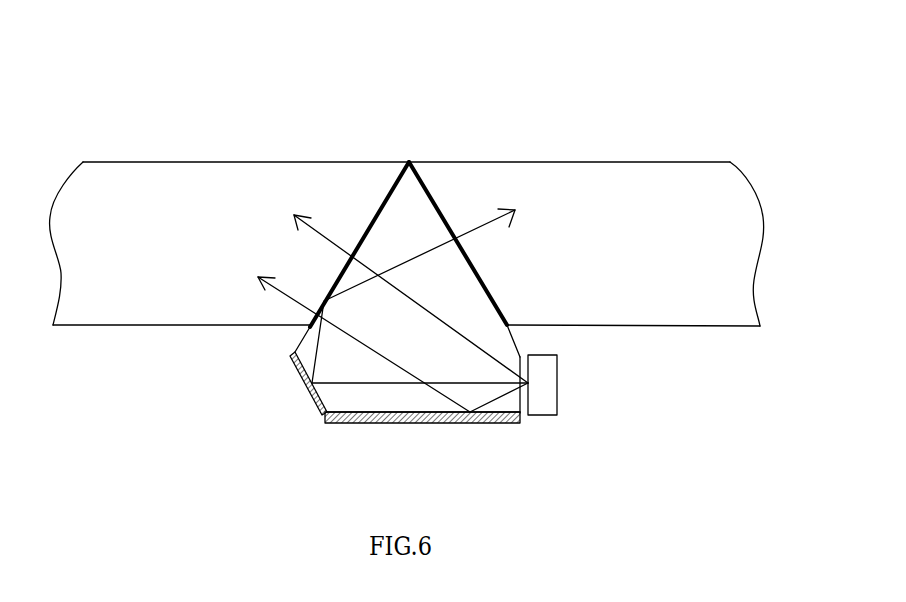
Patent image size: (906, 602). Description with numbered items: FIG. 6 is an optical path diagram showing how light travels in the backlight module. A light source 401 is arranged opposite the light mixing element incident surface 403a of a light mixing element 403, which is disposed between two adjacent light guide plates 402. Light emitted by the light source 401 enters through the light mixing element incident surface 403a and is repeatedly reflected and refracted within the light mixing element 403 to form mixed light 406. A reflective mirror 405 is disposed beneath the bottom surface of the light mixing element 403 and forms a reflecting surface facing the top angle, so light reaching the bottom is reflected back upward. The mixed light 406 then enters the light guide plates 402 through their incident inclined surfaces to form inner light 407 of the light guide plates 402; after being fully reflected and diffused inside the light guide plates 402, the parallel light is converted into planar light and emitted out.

The light source 401 is at (542, 397).
The light guide plate 402 is at (180, 175).
The light mixing element 403 is at (410, 205).
The light mixing element incident surface 403a is at (522, 358).
The reflective mirror 405 is at (477, 423).
The mixed light 406 is at (398, 383).
The inner light 407 is at (287, 295).